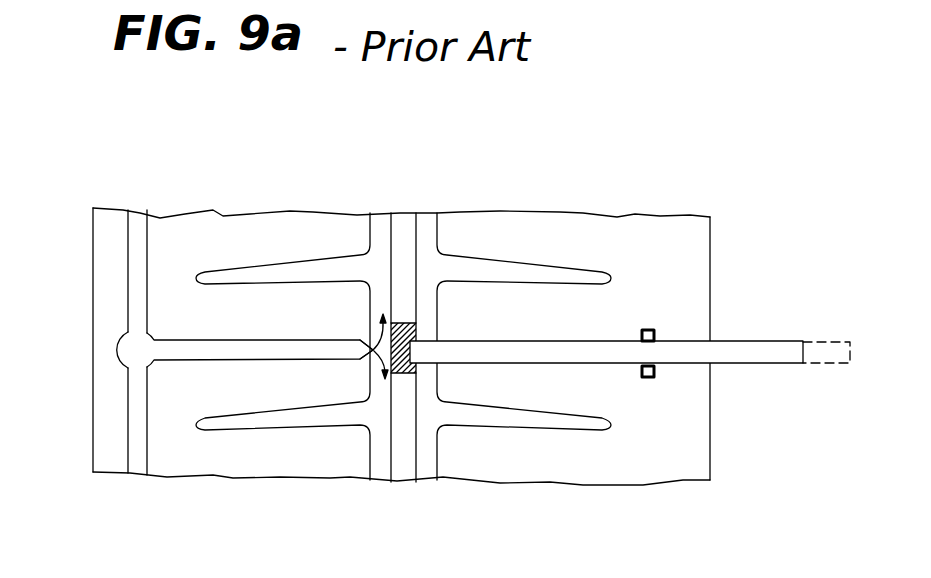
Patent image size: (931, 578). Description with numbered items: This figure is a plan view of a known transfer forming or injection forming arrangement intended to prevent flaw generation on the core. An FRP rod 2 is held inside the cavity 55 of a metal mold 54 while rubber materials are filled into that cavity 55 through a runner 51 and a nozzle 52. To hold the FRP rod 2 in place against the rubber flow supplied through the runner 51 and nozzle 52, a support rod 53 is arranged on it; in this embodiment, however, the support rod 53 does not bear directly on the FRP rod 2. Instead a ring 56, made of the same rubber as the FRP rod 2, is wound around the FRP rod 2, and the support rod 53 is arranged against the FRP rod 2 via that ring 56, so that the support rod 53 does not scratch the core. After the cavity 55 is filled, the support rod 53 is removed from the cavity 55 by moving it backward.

The FRP rod 2 is at (402, 212).
The runner 51 is at (128, 281).
The nozzle 52 is at (372, 352).
The support rod 53 is at (773, 341).
The metal mold 54 is at (665, 457).
The cavity 55 is at (428, 214).
The ring 56 is at (402, 374).